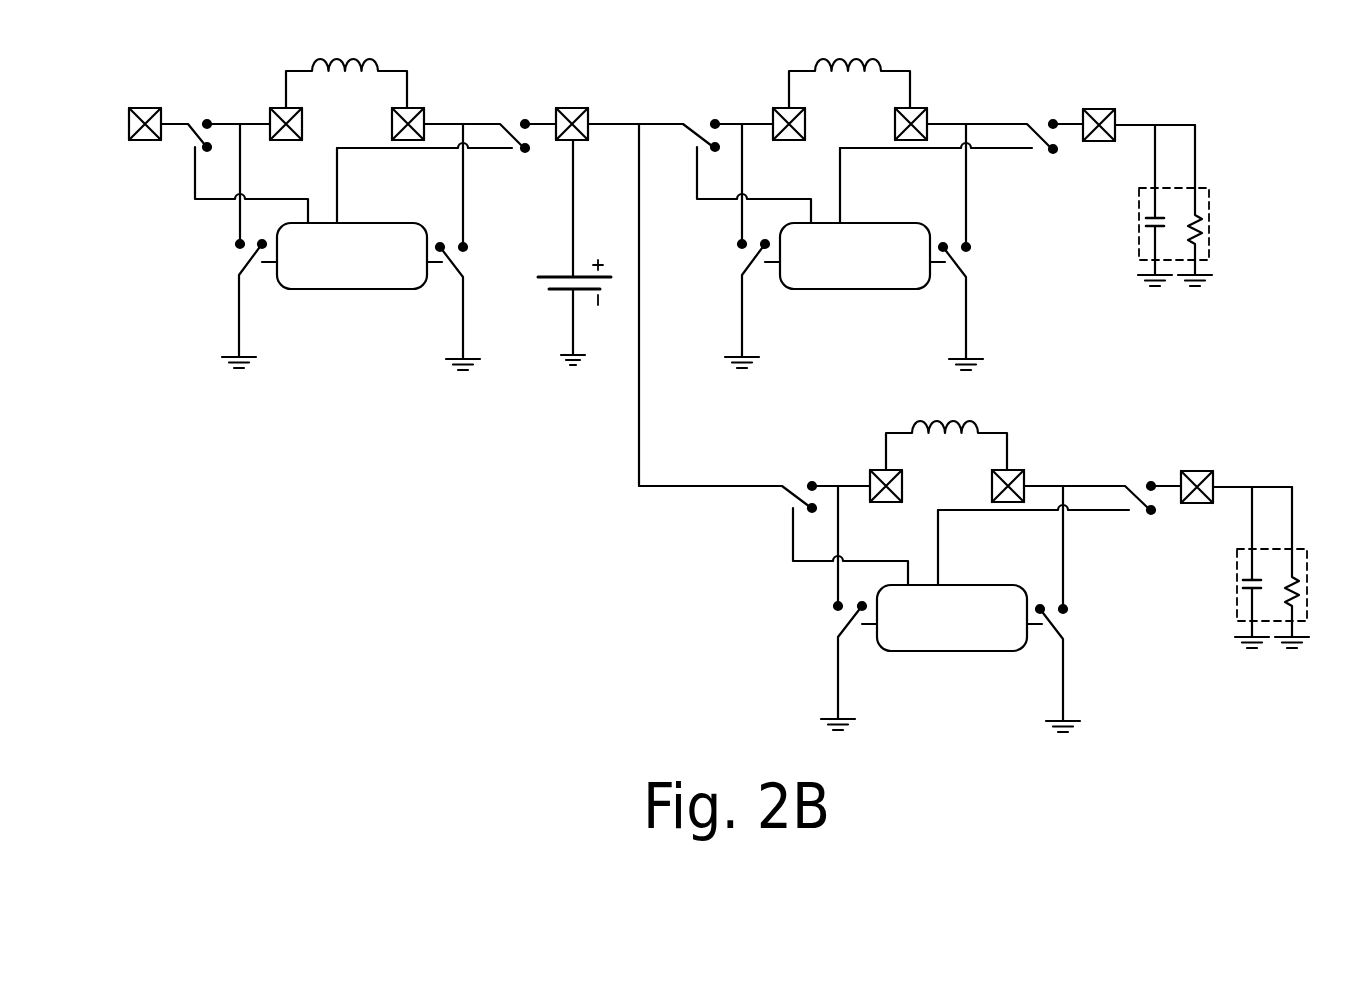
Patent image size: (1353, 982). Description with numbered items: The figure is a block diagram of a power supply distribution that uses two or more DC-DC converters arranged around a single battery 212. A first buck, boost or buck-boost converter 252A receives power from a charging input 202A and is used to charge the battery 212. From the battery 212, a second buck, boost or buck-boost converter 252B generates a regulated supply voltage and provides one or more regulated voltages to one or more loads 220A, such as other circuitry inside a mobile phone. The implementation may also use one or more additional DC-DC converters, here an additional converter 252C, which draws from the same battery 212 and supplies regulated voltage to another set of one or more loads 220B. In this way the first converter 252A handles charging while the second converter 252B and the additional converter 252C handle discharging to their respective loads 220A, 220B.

The charging input 202A is at (138, 107).
The battery 212 is at (560, 297).
The loads 220A is at (1209, 243).
The loads 220B is at (1237, 590).
The first buck, boost or buck-boost converter 252A is at (320, 415).
The second buck, boost or buck-boost converter 252B is at (738, 46).
The additional DC-DC converter 252C is at (744, 645).